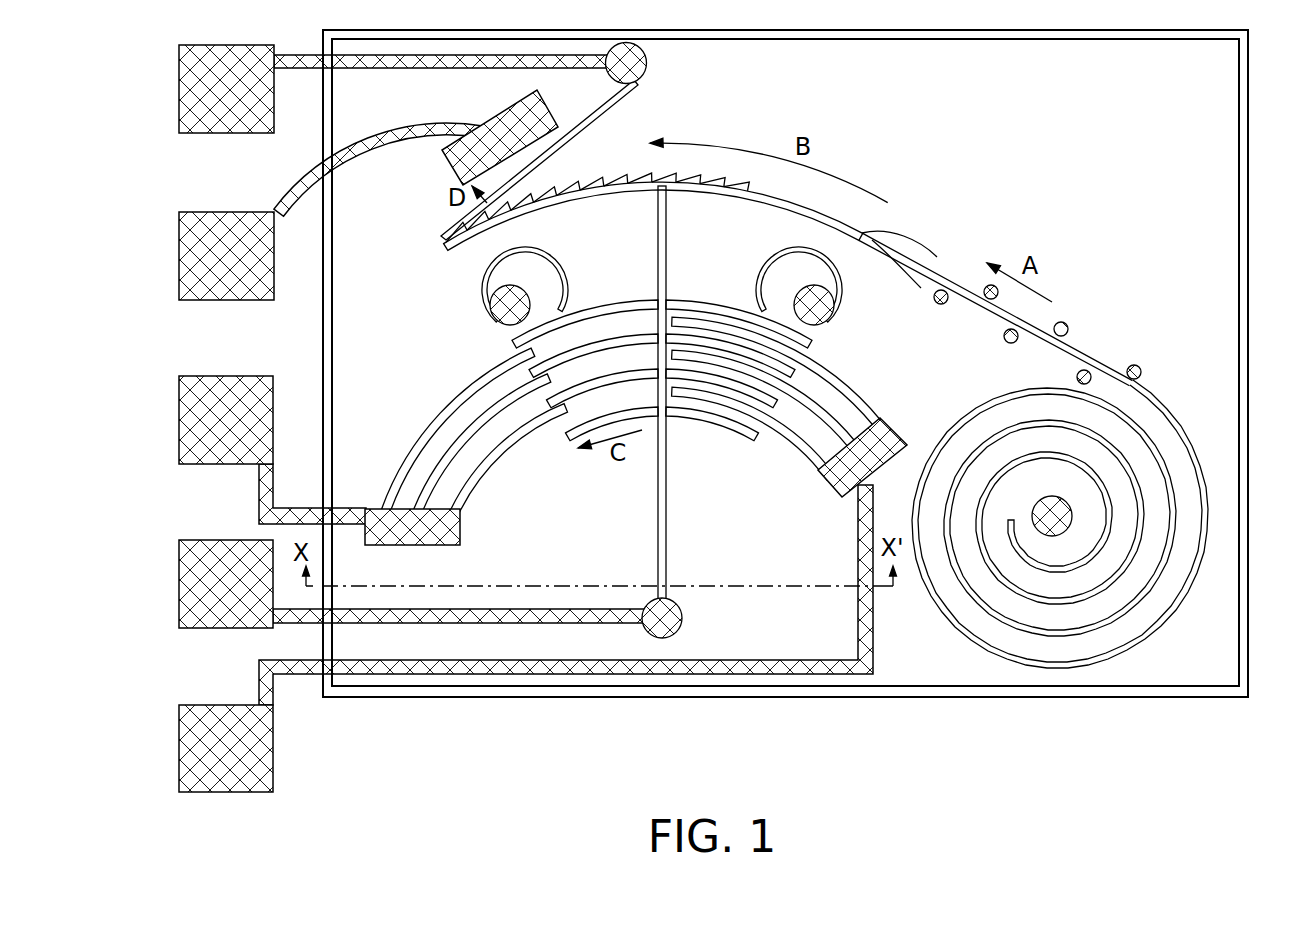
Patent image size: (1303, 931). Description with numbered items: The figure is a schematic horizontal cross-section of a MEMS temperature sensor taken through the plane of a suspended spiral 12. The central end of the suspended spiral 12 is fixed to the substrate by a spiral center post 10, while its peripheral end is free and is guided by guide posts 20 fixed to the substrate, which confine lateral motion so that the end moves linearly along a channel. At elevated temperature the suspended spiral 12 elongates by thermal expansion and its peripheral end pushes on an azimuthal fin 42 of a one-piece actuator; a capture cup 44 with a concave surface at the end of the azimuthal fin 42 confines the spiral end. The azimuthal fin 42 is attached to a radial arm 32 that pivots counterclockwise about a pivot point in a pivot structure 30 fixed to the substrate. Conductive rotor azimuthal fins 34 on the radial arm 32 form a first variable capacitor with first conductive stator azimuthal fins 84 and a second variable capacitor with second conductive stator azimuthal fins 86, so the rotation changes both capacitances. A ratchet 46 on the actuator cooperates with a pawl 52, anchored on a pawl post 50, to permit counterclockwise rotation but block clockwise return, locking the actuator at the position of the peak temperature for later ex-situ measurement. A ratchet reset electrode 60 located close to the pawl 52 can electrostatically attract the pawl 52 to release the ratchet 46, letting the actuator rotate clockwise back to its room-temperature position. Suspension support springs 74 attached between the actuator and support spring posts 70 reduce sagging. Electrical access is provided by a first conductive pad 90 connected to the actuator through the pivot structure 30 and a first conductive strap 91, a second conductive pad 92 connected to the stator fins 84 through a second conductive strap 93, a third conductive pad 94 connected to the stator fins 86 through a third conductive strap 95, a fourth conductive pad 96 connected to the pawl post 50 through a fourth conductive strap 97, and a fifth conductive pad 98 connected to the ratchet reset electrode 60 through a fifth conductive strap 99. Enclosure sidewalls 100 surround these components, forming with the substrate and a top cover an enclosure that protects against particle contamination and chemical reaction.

The spiral center post 10 is at (1041, 526).
The suspended spiral 12 is at (946, 612).
The guide post 20 is at (1067, 327).
The pivot structure 30 is at (651, 628).
The radial arm 32 is at (658, 490).
The conductive rotor azimuthal fin 34 is at (694, 418).
The azimuthal fin 42 is at (716, 190).
The capture cup 44 is at (904, 236).
The ratchet 46 is at (598, 180).
The pawl post 50 is at (615, 73).
The pawl 52 is at (628, 97).
The ratchet reset electrode 60 is at (489, 148).
The support spring post 70 is at (499, 315).
The suspension support spring 74 is at (563, 270).
The first conductive stator azimuthal fin 84 is at (512, 448).
The second conductive stator azimuthal fin 86 is at (798, 448).
The first conductive pad 90 is at (212, 592).
The first conductive strap 91 is at (496, 618).
The second conductive pad 92 is at (212, 430).
The second conductive strap 93 is at (406, 537).
The third conductive pad 94 is at (212, 758).
The third conductive strap 95 is at (850, 468).
The fourth conductive pad 96 is at (212, 90).
The fourth conductive strap 97 is at (347, 68).
The fifth conductive pad 98 is at (212, 268).
The fifth conductive strap 99 is at (346, 160).
The enclosure sidewalls 100 is at (1128, 696).